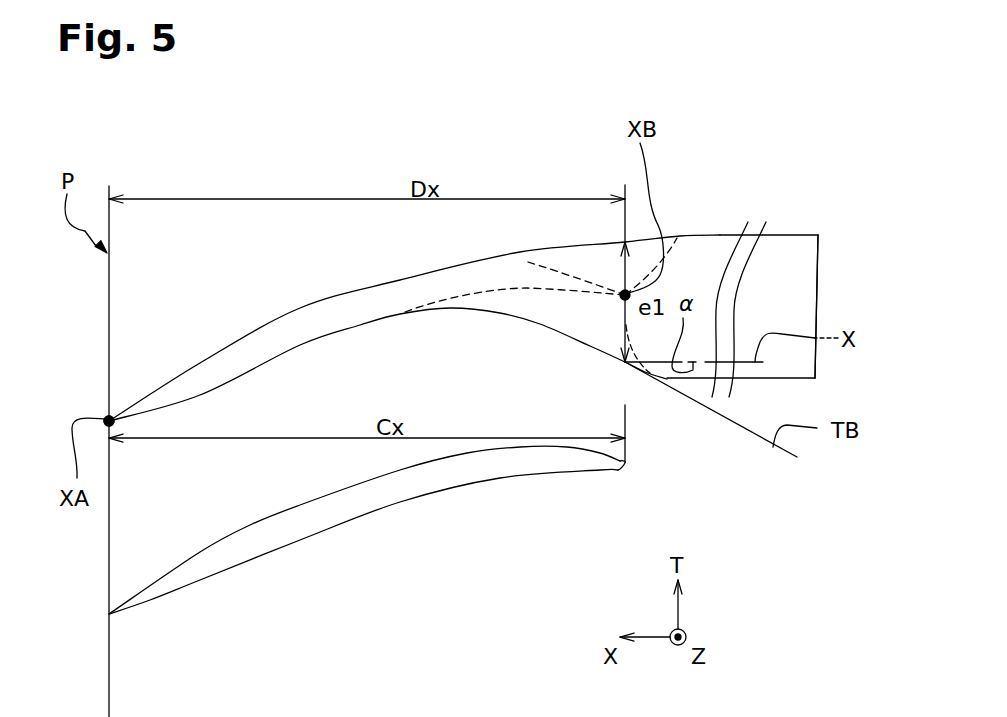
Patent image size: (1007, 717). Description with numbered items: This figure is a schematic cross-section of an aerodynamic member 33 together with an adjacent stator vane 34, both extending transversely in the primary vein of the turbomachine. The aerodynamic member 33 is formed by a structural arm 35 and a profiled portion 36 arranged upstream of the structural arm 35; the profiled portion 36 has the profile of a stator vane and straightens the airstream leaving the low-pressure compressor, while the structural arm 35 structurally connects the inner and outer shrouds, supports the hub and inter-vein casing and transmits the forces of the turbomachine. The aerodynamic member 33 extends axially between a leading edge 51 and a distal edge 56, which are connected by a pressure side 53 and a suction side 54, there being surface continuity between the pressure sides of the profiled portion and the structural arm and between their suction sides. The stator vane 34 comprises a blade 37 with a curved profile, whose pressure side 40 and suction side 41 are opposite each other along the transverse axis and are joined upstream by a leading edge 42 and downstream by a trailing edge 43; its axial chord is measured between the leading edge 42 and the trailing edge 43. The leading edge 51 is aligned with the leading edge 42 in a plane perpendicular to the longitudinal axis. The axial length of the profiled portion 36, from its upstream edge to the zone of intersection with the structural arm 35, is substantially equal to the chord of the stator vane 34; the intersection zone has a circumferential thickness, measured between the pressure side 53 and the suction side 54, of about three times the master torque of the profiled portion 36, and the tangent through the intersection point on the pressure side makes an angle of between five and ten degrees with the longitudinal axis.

The aerodynamic member 33 is at (483, 288).
The stator vane 34 is at (398, 551).
The structural arm 35 is at (696, 273).
The profiled portion 36 is at (212, 369).
The blade 37 is at (350, 503).
The pressure side 40 is at (255, 580).
The suction side 41 is at (305, 490).
The leading edge 42 is at (108, 615).
The trailing edge 43 is at (625, 463).
The leading edge 51 is at (107, 420).
The pressure side 53 is at (385, 326).
The suction side 54 is at (372, 270).
The distal edge 56 is at (818, 273).